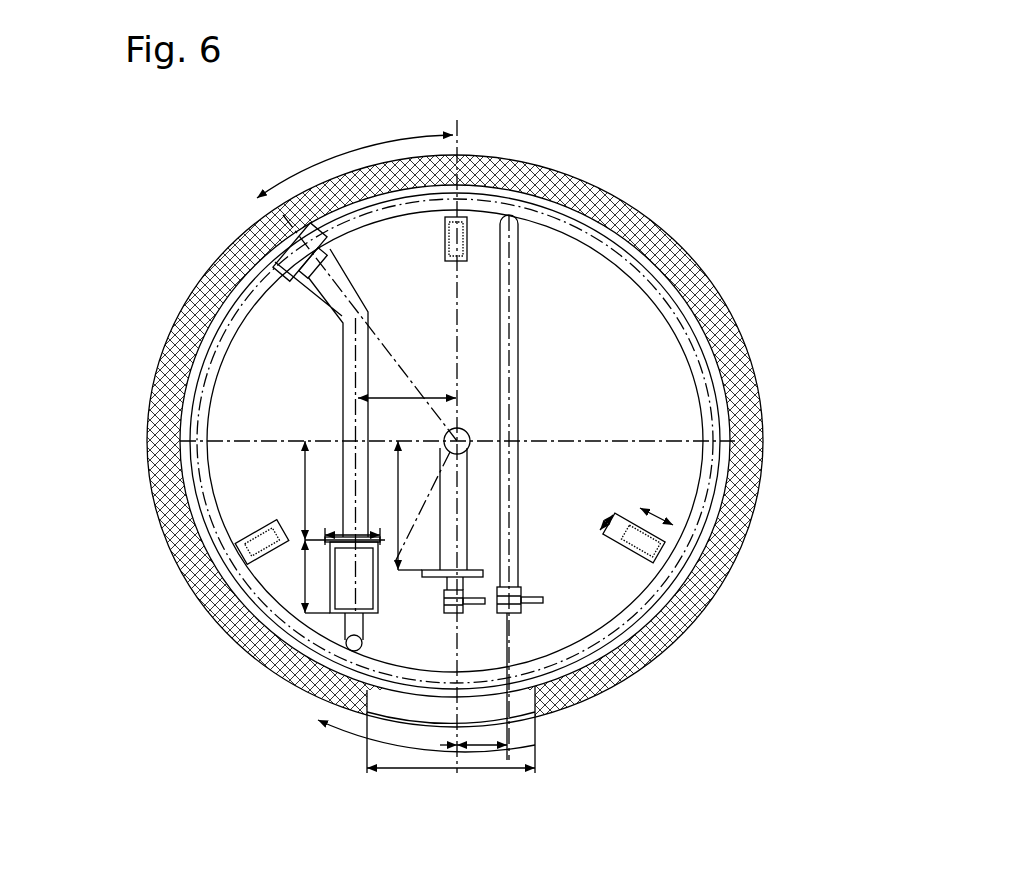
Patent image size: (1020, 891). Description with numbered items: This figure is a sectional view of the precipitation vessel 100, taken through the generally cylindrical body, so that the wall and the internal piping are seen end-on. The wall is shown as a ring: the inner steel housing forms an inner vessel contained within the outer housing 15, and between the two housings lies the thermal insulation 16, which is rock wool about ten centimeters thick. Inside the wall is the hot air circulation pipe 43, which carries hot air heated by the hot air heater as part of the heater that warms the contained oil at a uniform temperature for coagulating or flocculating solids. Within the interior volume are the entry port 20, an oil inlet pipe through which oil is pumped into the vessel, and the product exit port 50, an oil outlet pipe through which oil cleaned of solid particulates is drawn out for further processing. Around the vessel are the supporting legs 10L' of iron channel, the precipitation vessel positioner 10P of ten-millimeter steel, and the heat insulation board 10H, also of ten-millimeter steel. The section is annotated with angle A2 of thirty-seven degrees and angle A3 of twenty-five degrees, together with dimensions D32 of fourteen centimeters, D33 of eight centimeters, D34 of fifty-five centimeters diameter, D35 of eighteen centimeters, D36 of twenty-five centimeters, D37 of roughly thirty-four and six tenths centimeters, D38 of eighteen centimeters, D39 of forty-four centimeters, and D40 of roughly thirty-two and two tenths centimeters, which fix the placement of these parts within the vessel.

The precipitation vessel 100 is at (250, 778).
The thermal insulation 16 is at (592, 690).
The outer housing 15 is at (160, 530).
The hot air circulation pipe 43 is at (463, 425).
The product exit port 50 is at (455, 493).
The entry port 20 is at (513, 352).
The supporting legs 10L' is at (212, 604).
The precipitation vessel positioner 10P is at (660, 555).
The heat insulation board 10H is at (640, 562).
The angle A2 is at (393, 142).
The angle A3 is at (350, 735).
The dimension D32 is at (668, 518).
The dimension D33 is at (603, 525).
The dimension D34 is at (440, 768).
The dimension D35 is at (478, 750).
The dimension D36 is at (290, 590).
The dimension D37 is at (303, 500).
The dimension D38 is at (343, 445).
The dimension D39 is at (398, 500).
The dimension D40 is at (430, 398).